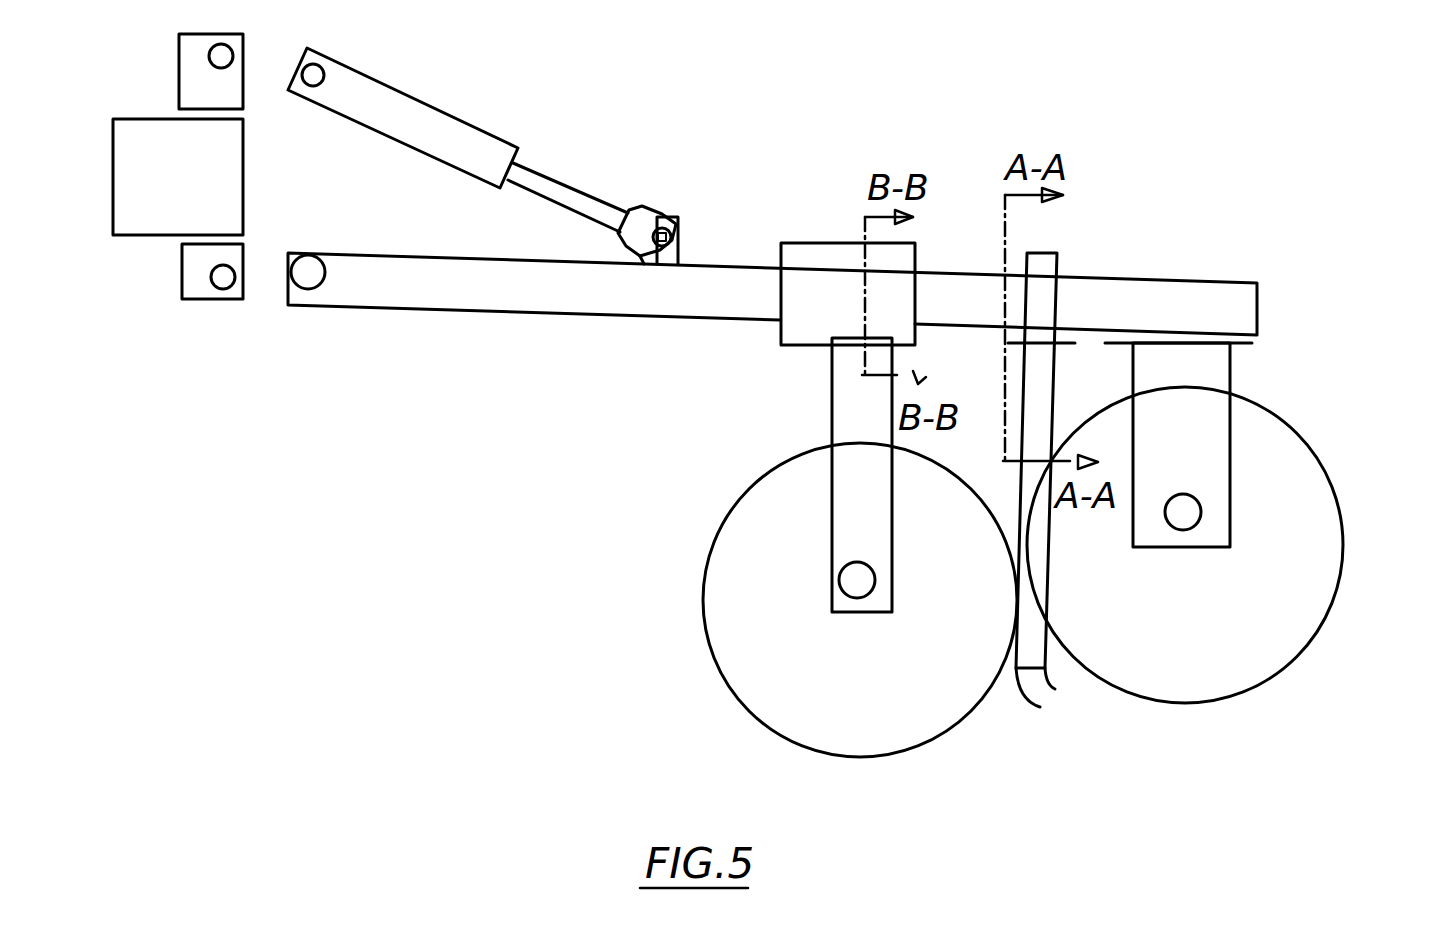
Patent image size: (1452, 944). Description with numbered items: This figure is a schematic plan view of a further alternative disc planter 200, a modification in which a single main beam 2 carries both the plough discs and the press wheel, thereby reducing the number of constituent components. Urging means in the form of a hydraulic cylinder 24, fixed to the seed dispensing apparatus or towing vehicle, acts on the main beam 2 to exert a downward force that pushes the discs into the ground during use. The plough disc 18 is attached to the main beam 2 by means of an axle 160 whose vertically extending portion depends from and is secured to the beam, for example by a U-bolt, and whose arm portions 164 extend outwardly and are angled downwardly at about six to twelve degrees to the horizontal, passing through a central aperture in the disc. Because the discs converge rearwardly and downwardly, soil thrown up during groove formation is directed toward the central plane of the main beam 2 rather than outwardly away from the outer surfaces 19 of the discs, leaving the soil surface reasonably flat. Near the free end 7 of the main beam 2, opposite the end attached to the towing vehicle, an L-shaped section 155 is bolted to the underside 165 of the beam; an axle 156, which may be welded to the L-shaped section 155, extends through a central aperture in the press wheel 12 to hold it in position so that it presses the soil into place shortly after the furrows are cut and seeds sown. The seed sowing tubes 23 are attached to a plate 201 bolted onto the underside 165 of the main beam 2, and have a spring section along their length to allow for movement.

The main beam 2 is at (397, 292).
The free end 7 is at (1258, 308).
The press wheel 12 is at (1250, 693).
The plough disc 18 is at (760, 725).
The outer surface 19 is at (872, 708).
The seed sowing tube 23 is at (1047, 252).
The hydraulic cylinder 24 is at (362, 73).
The L-shaped section 155 is at (1208, 368).
The axle 156 is at (1183, 512).
The axle 160 is at (840, 403).
The arm portion 164 is at (857, 580).
The underside 165 is at (790, 347).
The disc planter 200 is at (708, 232).
The plate 201 is at (1008, 343).